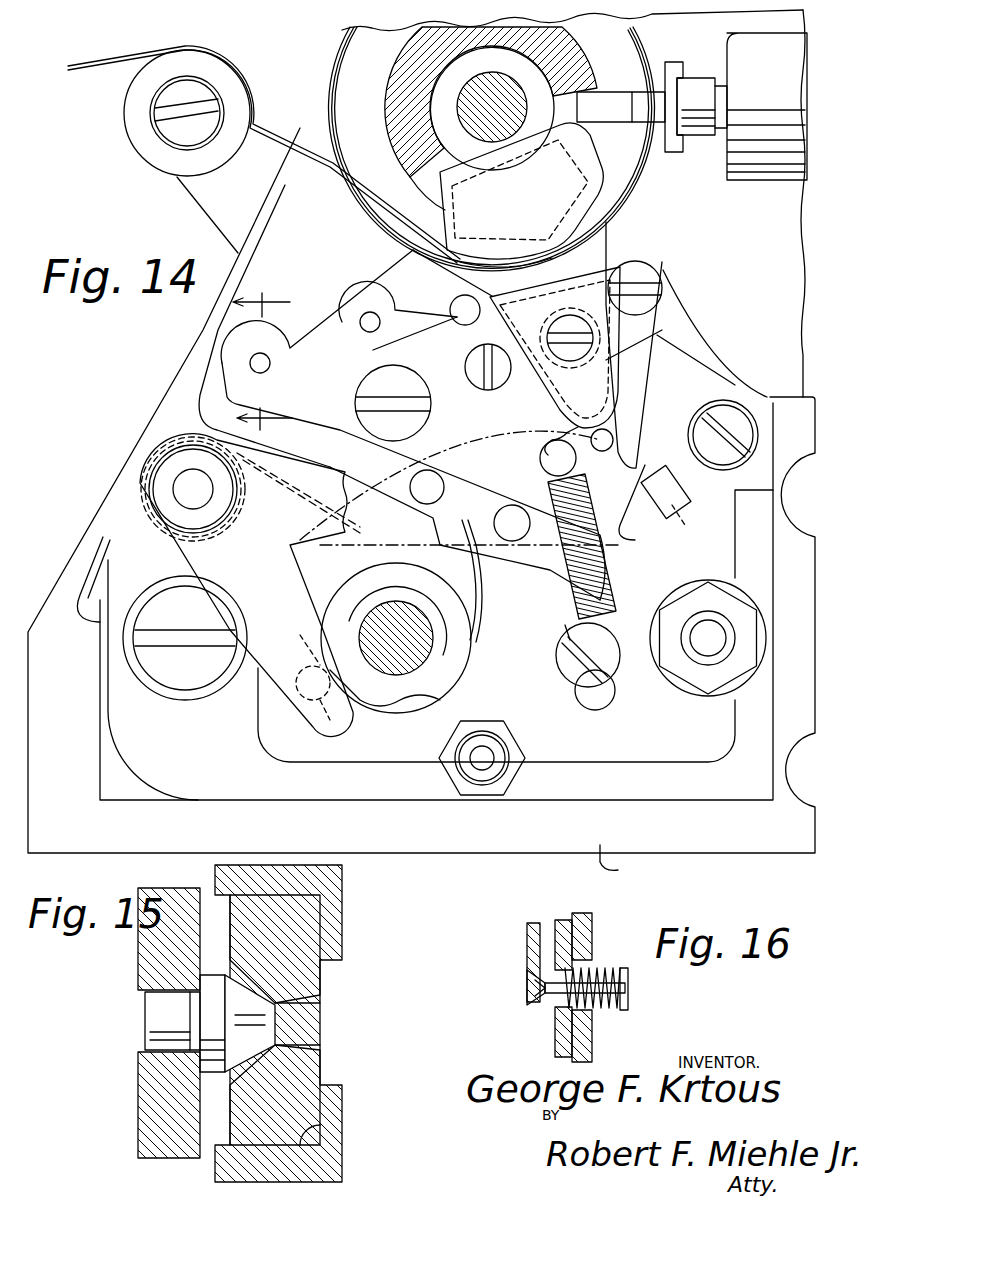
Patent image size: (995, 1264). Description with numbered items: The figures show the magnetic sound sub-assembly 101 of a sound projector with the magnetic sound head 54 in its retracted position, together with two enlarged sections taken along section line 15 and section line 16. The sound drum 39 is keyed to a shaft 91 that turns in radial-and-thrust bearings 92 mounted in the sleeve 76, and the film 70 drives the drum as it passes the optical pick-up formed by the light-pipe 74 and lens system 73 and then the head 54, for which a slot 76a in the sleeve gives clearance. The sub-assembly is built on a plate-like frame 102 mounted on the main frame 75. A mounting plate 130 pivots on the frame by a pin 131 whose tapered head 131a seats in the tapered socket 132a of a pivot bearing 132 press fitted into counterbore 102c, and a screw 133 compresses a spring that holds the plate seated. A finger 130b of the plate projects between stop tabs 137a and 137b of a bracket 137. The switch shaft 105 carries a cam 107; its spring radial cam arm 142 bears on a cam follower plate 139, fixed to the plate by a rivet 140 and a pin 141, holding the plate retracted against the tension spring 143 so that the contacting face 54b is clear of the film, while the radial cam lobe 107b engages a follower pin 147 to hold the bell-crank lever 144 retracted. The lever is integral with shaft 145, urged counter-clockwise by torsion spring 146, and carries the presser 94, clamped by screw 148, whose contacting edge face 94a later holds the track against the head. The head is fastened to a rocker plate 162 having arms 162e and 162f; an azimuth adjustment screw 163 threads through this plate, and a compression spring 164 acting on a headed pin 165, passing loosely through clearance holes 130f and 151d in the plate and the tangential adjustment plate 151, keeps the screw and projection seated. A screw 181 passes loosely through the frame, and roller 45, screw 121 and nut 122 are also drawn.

In FIG. 14, the section line 15— 15 is at (265, 353).
In FIG. 14, the section line 16— 16 is at (465, 290).
In FIG. 14, the sound drum 39 is at (342, 62).
In FIG. 14, the roller 45 is at (133, 102).
In FIG. 14, the magnetic sound head 54 is at (520, 193).
In FIG. 14, the contacting face 54b is at (552, 240).
In FIG. 14, the film 70 is at (243, 60).
In FIG. 14, the lens system 73 is at (703, 136).
In FIG. 14, the light-pipe 74 is at (645, 60).
In FIG. 14, the frame 75 is at (623, 866).
In FIG. 14, the sleeve 76 is at (595, 90).
In FIG. 14, the slot 76a is at (420, 178).
In FIG. 14, the shaft 91 is at (496, 80).
In FIG. 14, the radial-and-thrust bearings 92 is at (430, 88).
In FIG. 14, the presser 94 is at (630, 308).
In FIG. 14, the contacting edge face 94a is at (625, 262).
In FIG. 14, the magnetic sound sub-assembly 101 is at (152, 376).
In FIG. 14, the frame 102 is at (700, 770).
In FIG. 15, the frame 102 is at (335, 883).
In FIG. 15, the counterbore 102c is at (302, 1142).
In FIG. 14, the switch shaft 105 is at (398, 672).
In FIG. 14, the cam 107 is at (448, 672).
In FIG. 14, the radial cam lobe 107b is at (291, 640).
In FIG. 14, the screw 121 is at (620, 680).
In FIG. 14, the nut 122 is at (690, 690).
In FIG. 14, the mounting plate 130 is at (320, 305).
In FIG. 15, the mounting plate 130 is at (140, 965).
In FIG. 16, the mounting plate 130 is at (582, 1042).
In FIG. 14, the finger 130b is at (643, 511).
In FIG. 16, the clearance hole 130f is at (582, 915).
In FIG. 14, the pin 131 is at (264, 363).
In FIG. 15, the pin 131 is at (160, 1018).
In FIG. 15, the tapered head 131a is at (260, 1015).
In FIG. 15, the pivot bearing 132 is at (300, 938).
In FIG. 15, the tapered socket 132a is at (265, 1027).
In FIG. 14, the screw 133 is at (355, 415).
In FIG. 14, the bracket 137 is at (690, 425).
In FIG. 14, the stop tab 137a is at (660, 468).
In FIG. 14, the stop tab 137b is at (704, 523).
In FIG. 14, the cam follower plate 139 is at (508, 570).
In FIG. 14, the rivet 140 is at (514, 504).
In FIG. 14, the pin 141 is at (430, 478).
In FIG. 14, the spring radial cam arm 142 is at (480, 620).
In FIG. 14, the tension spring 143 is at (600, 578).
In FIG. 14, the bell-crank lever 144 is at (252, 587).
In FIG. 14, the shaft 145 is at (185, 480).
In FIG. 14, the torsion spring 146 is at (298, 494).
In FIG. 14, the follower pin 147 is at (330, 711).
In FIG. 14, the screw 148 is at (568, 360).
In FIG. 16, the tangential adjustment plate 151 is at (555, 1043).
In FIG. 16, the clearance hole 151d is at (550, 1012).
In FIG. 14, the rocker plate 162 is at (612, 235).
In FIG. 16, the rocker plate 162 is at (527, 946).
In FIG. 14, the arm 162e is at (410, 258).
In FIG. 14, the arm 162f is at (632, 390).
In FIG. 14, the azimuth adjustment screw 163 is at (368, 335).
In FIG. 16, the compression spring 164 is at (602, 968).
In FIG. 16, the headed pin 165 is at (630, 1005).
In FIG. 14, the screw 181 is at (190, 672).